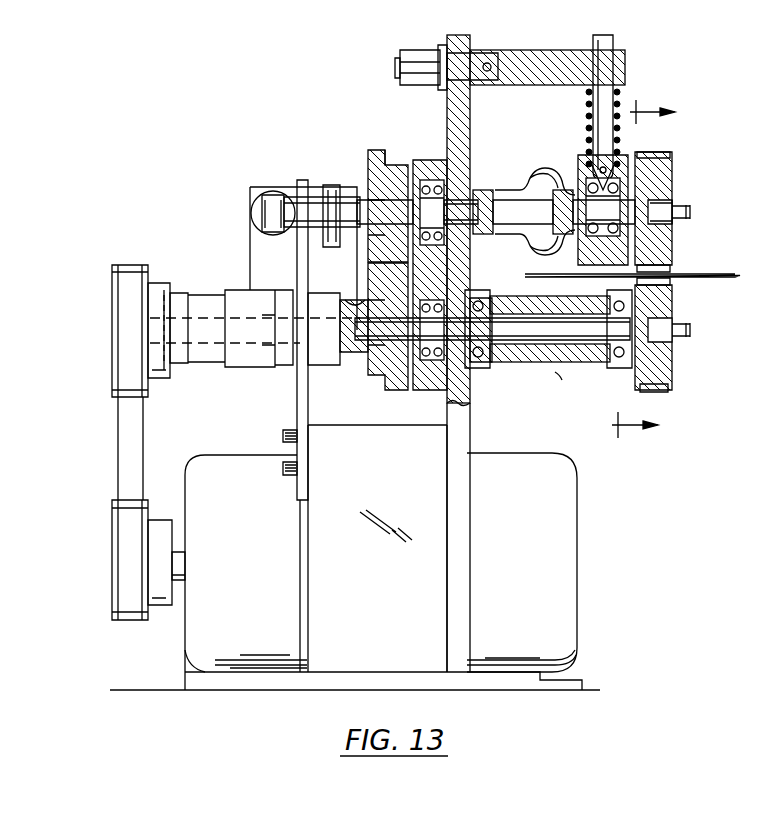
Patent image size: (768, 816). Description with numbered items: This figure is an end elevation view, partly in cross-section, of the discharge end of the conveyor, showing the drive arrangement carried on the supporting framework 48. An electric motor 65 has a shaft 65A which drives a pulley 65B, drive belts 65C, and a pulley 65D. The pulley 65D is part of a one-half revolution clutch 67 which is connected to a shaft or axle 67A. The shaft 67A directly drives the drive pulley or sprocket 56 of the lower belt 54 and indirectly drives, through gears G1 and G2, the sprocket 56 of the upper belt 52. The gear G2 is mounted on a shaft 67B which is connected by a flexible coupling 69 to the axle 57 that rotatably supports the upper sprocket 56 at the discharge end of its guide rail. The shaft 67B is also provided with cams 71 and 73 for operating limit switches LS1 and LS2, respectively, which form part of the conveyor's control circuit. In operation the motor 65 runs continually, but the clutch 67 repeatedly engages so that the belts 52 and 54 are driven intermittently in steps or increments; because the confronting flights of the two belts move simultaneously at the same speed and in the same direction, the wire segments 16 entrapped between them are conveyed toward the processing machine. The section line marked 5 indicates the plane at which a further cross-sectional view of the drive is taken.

The supporting framework 48 is at (528, 680).
The electric motor 65 is at (256, 577).
The shaft 65A is at (178, 582).
The pulley 65B is at (112, 535).
The drive belts 65C is at (143, 438).
The pulley 65D is at (150, 268).
The one-half revolution clutch 67 is at (216, 362).
The shaft or axle 67A is at (350, 352).
The shaft 67B is at (495, 192).
The flexible coupling 69 is at (520, 240).
The cam 71 is at (272, 196).
The cam 73 is at (331, 184).
The limit switch LS1 is at (258, 186).
The limit switch LS2 is at (352, 185).
The gear G1 is at (395, 372).
The gear G2 is at (385, 172).
The upper endless flexible belt 52 is at (655, 158).
The lower endless flexible belt 54 is at (660, 390).
The drive pulley or sprocket 56 is at (672, 250).
The axle 57 is at (662, 198).
The wire segments 16 is at (705, 273).
The section line 5- 5 is at (643, 268).